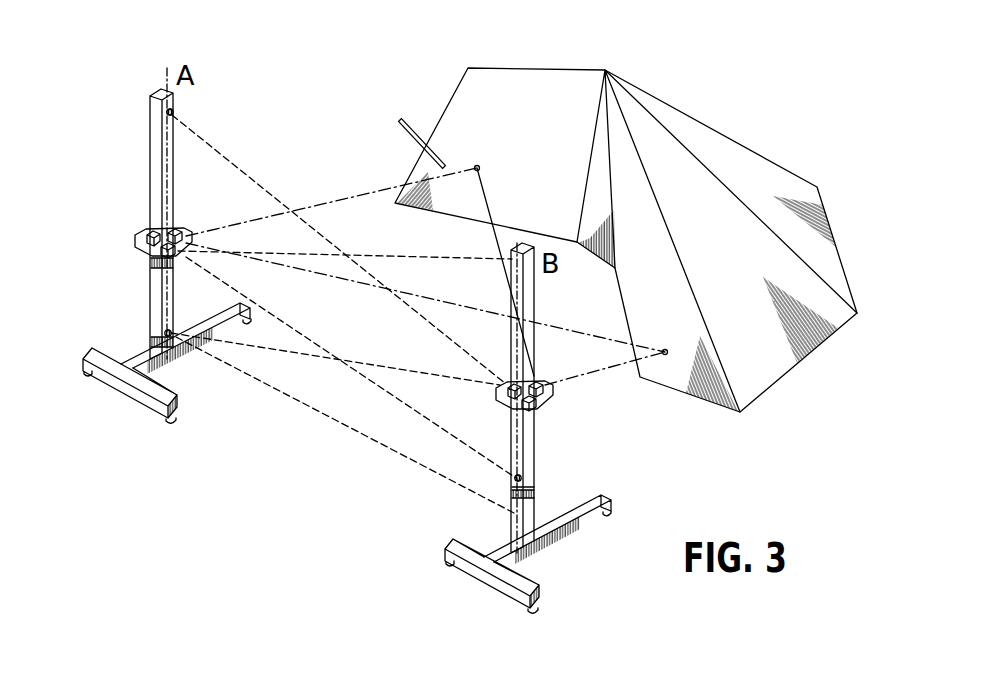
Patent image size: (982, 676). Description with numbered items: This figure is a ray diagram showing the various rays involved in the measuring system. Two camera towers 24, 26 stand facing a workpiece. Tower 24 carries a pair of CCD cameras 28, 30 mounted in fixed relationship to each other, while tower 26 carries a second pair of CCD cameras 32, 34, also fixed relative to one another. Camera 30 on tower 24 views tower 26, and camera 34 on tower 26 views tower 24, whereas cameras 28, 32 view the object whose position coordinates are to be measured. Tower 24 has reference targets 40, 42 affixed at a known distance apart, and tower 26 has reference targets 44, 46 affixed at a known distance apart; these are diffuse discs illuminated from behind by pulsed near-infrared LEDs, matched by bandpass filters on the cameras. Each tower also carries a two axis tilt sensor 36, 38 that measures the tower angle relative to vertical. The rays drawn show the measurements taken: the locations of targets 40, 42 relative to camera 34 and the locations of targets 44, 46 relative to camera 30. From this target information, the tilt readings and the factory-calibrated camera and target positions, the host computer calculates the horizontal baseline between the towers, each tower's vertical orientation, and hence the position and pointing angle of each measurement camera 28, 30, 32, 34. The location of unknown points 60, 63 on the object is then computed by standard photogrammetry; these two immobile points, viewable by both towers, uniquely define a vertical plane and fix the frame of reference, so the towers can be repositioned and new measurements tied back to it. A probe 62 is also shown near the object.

The tower 24 is at (150, 148).
The tower 26 is at (549, 510).
The CCD camera 28 is at (184, 228).
The CCD camera 30 is at (150, 265).
The CCD camera 32 is at (541, 380).
The CCD camera 34 is at (508, 400).
The two axis tilt sensor 36 is at (136, 236).
The two axis tilt sensor 38 is at (548, 398).
The reference target 40 is at (175, 112).
The reference target 42 is at (165, 333).
The reference target 44 is at (512, 257).
The reference target 46 is at (522, 482).
The unknown point 60 is at (483, 167).
The probe 62 is at (410, 137).
The unknown point 63 is at (665, 349).